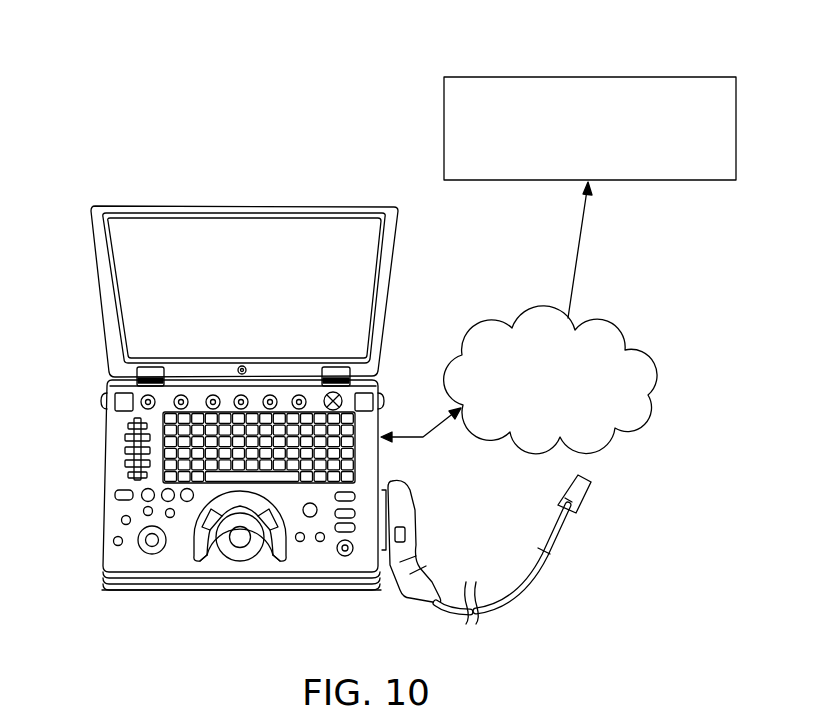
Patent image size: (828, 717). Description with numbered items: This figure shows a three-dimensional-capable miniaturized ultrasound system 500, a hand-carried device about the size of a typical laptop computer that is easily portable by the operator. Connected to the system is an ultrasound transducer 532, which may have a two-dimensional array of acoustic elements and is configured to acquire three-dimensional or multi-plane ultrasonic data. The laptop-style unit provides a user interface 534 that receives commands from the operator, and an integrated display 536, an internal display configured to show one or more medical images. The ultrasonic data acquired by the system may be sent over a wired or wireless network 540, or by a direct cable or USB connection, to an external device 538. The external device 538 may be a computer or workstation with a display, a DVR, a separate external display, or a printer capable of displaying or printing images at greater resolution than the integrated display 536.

The 3D-capable miniaturized ultrasound system 500 is at (148, 180).
The ultrasound transducer 532 is at (486, 613).
The user interface 534 is at (97, 405).
The integrated display 536 is at (82, 214).
The external device 538 is at (590, 77).
The network 540 is at (488, 323).